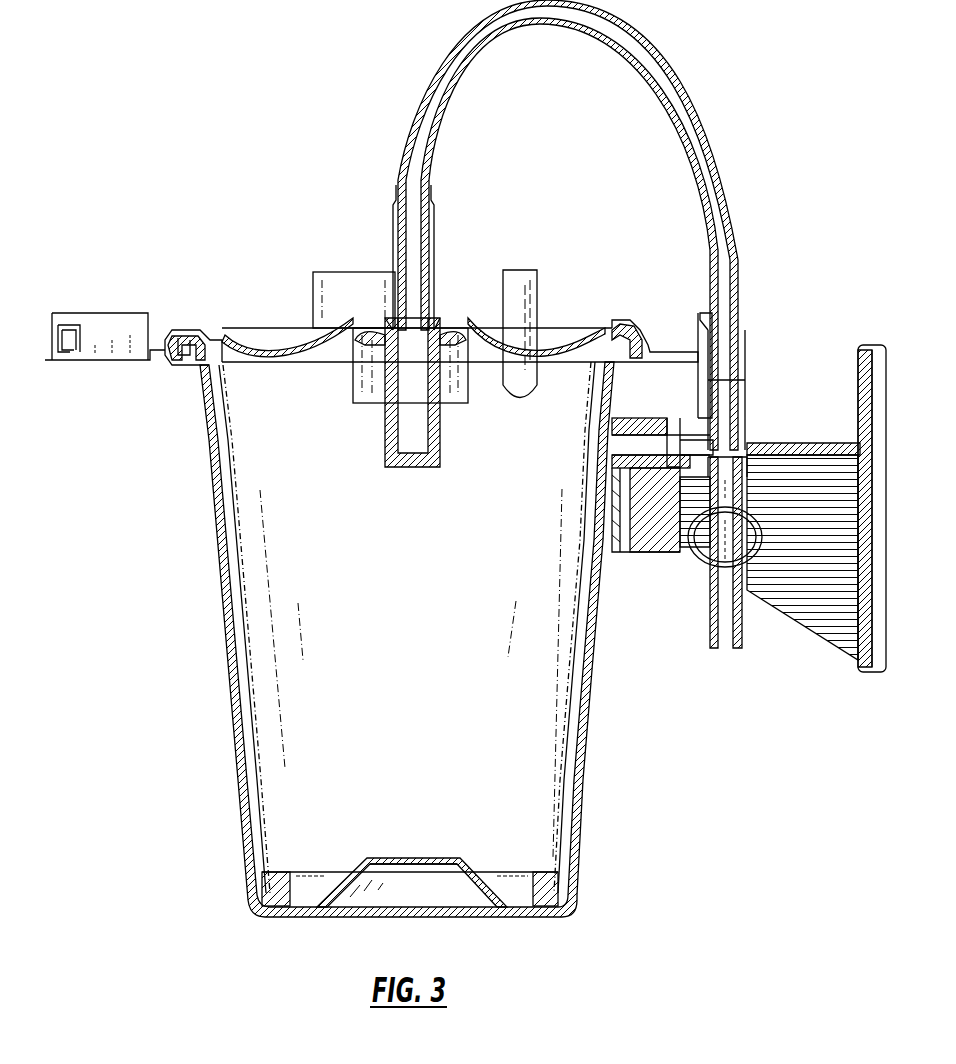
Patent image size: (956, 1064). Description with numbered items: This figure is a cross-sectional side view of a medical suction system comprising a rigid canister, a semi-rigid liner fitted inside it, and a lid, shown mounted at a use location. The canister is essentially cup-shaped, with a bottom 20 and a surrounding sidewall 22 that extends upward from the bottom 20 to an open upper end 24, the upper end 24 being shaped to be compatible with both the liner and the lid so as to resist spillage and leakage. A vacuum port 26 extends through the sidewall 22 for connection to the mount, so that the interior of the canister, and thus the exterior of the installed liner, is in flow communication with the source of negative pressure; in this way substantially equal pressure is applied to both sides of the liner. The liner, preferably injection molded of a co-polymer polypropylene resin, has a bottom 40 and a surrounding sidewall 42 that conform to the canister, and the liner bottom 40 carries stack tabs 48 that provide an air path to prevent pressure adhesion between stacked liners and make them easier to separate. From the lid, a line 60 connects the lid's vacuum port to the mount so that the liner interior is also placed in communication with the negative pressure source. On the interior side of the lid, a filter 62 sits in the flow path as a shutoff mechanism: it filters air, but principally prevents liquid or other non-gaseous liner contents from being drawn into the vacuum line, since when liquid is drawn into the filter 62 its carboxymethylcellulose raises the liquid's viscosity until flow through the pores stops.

The bottom 20 is at (385, 858).
The sidewall 22 is at (262, 800).
The open upper end 24 is at (297, 372).
The vacuum port 26 is at (628, 447).
The bottom 40 is at (427, 858).
The sidewall 42 is at (235, 700).
The stack tabs 48 is at (290, 872).
The line 60 is at (420, 70).
The filter 62 is at (440, 462).